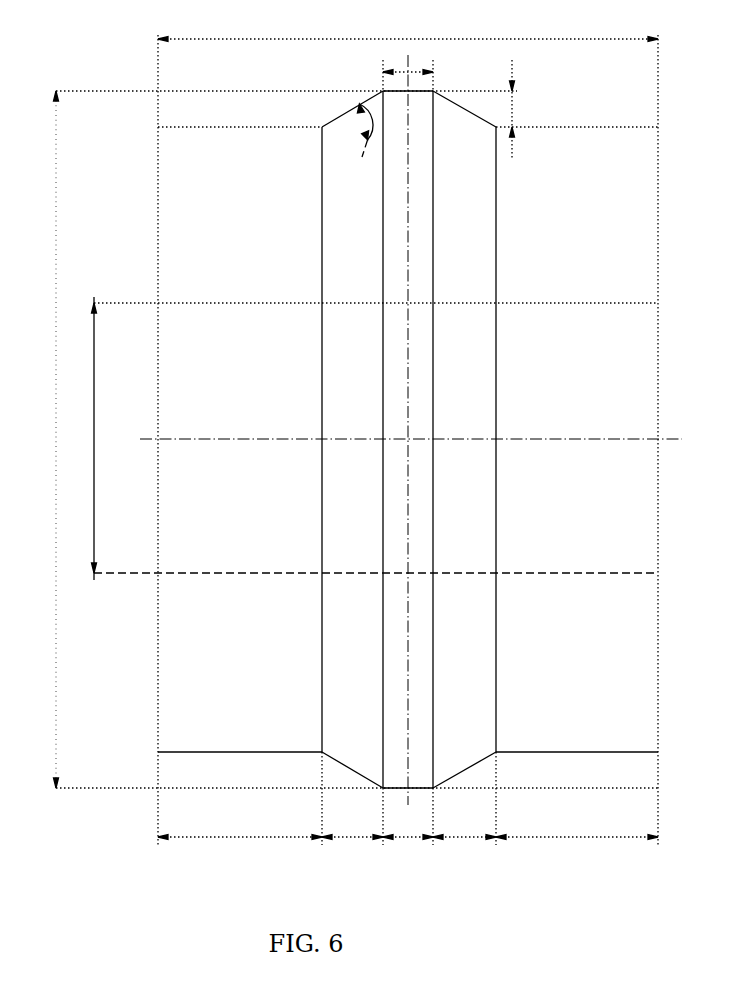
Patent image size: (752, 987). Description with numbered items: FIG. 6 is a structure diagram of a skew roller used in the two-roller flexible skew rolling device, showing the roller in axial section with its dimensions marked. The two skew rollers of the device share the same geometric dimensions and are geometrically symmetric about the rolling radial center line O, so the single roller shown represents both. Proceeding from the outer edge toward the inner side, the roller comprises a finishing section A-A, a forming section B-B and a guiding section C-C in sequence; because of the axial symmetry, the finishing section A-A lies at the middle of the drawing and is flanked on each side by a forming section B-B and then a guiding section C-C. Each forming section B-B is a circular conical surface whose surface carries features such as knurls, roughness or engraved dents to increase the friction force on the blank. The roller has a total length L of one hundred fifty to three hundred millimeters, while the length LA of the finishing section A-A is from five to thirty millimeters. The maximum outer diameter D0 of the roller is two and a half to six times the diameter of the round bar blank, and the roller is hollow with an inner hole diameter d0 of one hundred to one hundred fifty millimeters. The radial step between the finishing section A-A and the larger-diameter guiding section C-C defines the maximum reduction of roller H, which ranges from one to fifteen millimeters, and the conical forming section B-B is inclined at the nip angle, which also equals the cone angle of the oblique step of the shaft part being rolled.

The total length of roller L is at (408, 30).
The length of finishing section of roller LA is at (408, 63).
The maximum outer diameter of roller D0 is at (46, 439).
The diameter of inner hole of roller d0 is at (84, 438).
The maximum reduction of roller H is at (501, 109).
The rolling radial center line O is at (410, 438).
The finishing section of roller A-A is at (408, 827).
The forming section of roller B-B is at (409, 827).
The guiding section of roller C-C is at (408, 827).